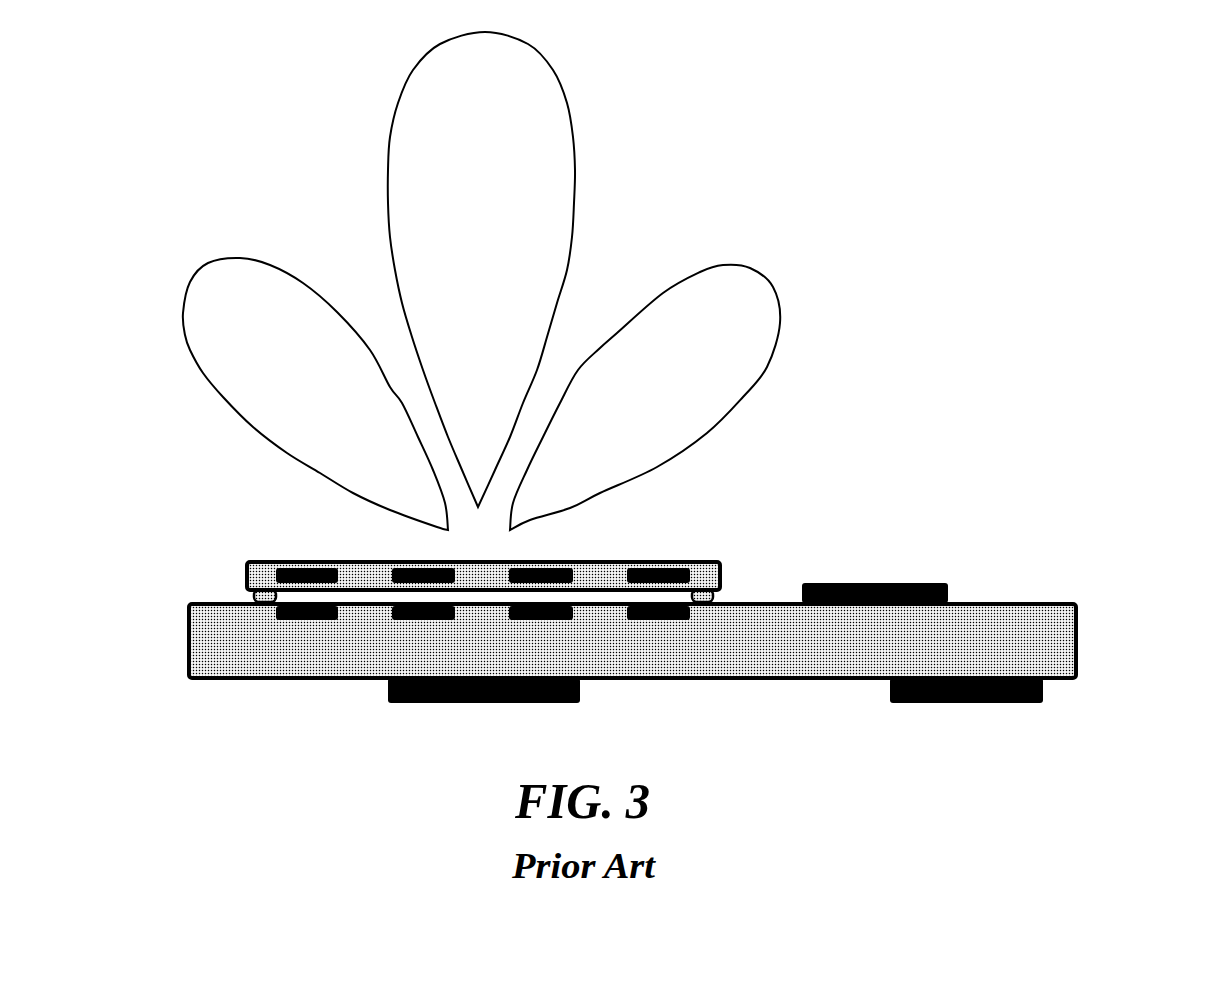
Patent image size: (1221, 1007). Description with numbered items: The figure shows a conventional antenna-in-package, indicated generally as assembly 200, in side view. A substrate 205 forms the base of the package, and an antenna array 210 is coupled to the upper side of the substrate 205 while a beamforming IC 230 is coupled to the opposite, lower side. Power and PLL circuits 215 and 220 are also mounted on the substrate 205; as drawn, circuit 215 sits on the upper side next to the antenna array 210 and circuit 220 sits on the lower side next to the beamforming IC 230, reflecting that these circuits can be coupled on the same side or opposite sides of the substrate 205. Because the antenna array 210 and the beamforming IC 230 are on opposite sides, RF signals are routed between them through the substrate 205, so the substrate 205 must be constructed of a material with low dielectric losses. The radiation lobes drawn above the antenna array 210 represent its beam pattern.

The prior art antenna assembly 200 is at (1082, 63).
The substrate 205 is at (215, 681).
The antenna array 210 is at (279, 561).
The power and PLL circuit 215 is at (858, 585).
The power and PLL circuit 220 is at (938, 702).
The beamforming IC 230 is at (437, 703).